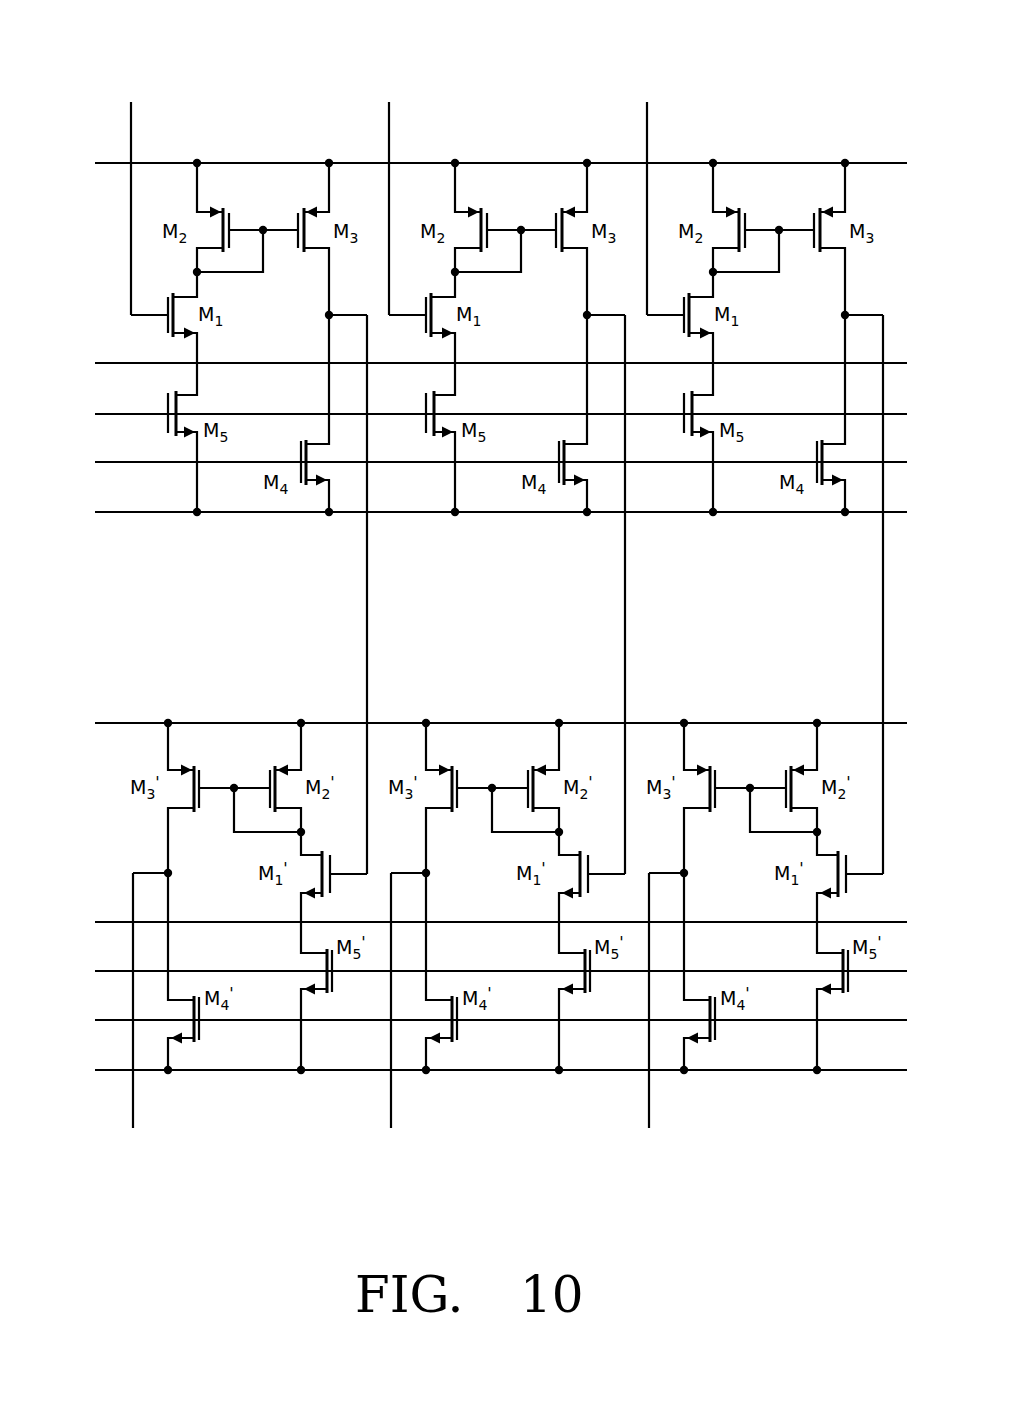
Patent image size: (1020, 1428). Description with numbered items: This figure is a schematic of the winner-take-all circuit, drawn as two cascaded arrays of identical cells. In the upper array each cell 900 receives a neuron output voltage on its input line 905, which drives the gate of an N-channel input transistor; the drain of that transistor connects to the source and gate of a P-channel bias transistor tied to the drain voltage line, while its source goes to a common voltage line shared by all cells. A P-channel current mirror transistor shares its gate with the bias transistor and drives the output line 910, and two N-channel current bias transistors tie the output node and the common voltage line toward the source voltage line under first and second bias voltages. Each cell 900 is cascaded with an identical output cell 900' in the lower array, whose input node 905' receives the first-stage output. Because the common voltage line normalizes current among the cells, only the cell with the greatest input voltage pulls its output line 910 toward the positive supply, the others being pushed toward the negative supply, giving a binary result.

The cell 900 is at (466, 266).
The input line 905 is at (353, 193).
The output cell 900' is at (466, 842).
The input node 905' is at (665, 594).
The output line 910 is at (722, 1175).